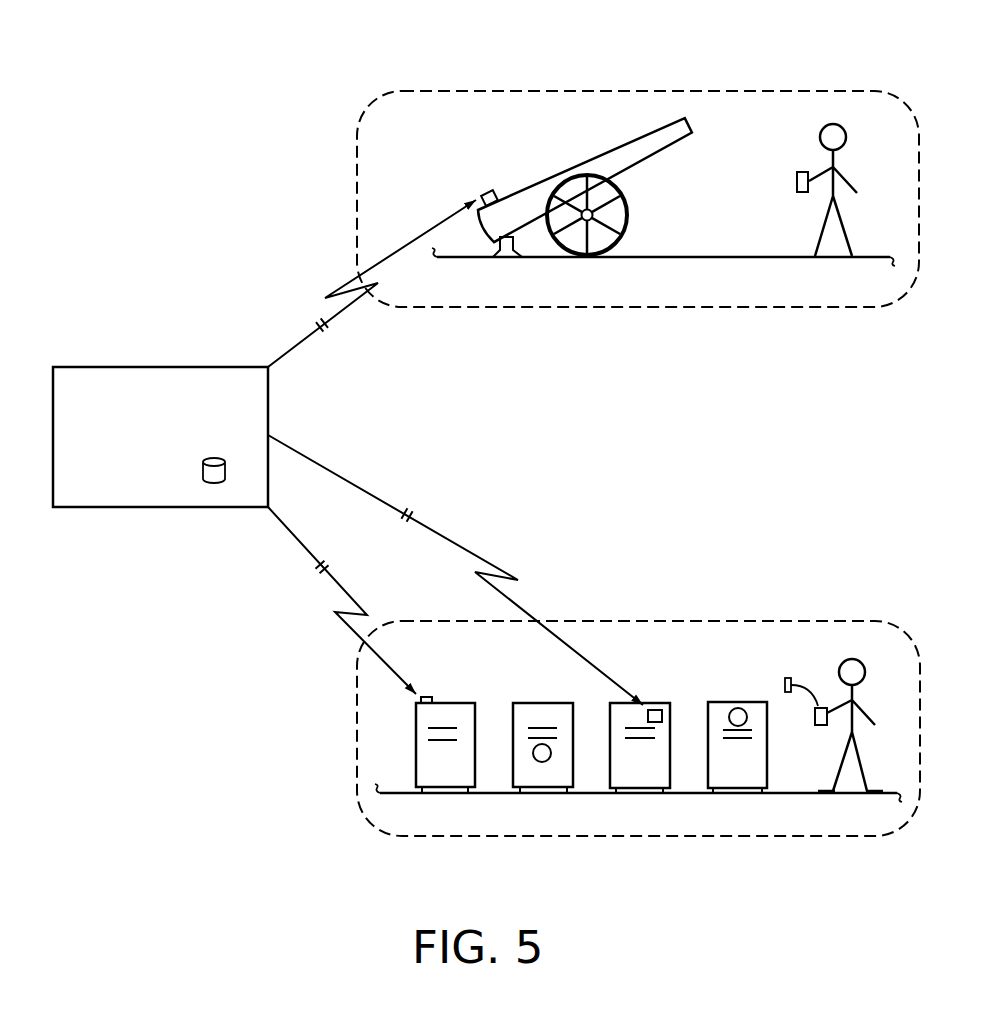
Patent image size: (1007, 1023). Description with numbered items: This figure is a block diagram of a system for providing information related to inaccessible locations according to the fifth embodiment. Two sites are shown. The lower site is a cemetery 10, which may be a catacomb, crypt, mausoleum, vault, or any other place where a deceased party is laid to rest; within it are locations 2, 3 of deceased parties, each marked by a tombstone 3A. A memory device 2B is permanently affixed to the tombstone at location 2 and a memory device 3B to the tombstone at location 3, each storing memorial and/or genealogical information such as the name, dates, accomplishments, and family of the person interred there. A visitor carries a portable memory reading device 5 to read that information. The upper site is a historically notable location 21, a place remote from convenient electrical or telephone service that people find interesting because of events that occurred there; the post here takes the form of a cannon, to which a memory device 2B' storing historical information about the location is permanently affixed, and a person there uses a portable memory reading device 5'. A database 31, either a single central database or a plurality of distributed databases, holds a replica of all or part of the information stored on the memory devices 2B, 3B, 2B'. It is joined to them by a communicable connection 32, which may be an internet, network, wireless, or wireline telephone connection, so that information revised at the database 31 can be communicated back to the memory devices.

The historically notable location 21 is at (817, 88).
The memory device 2B' is at (514, 161).
The portable memory reading device 5' is at (776, 152).
The database 31 is at (125, 364).
The communicable connection 32 is at (305, 348).
The cemetery 10 is at (814, 618).
The location 2 is at (441, 800).
The memory device 2B is at (460, 671).
The location 3 is at (637, 801).
The tombstone 3A is at (466, 757).
The memory device 3B is at (659, 705).
The portable memory reading device 5 is at (792, 681).